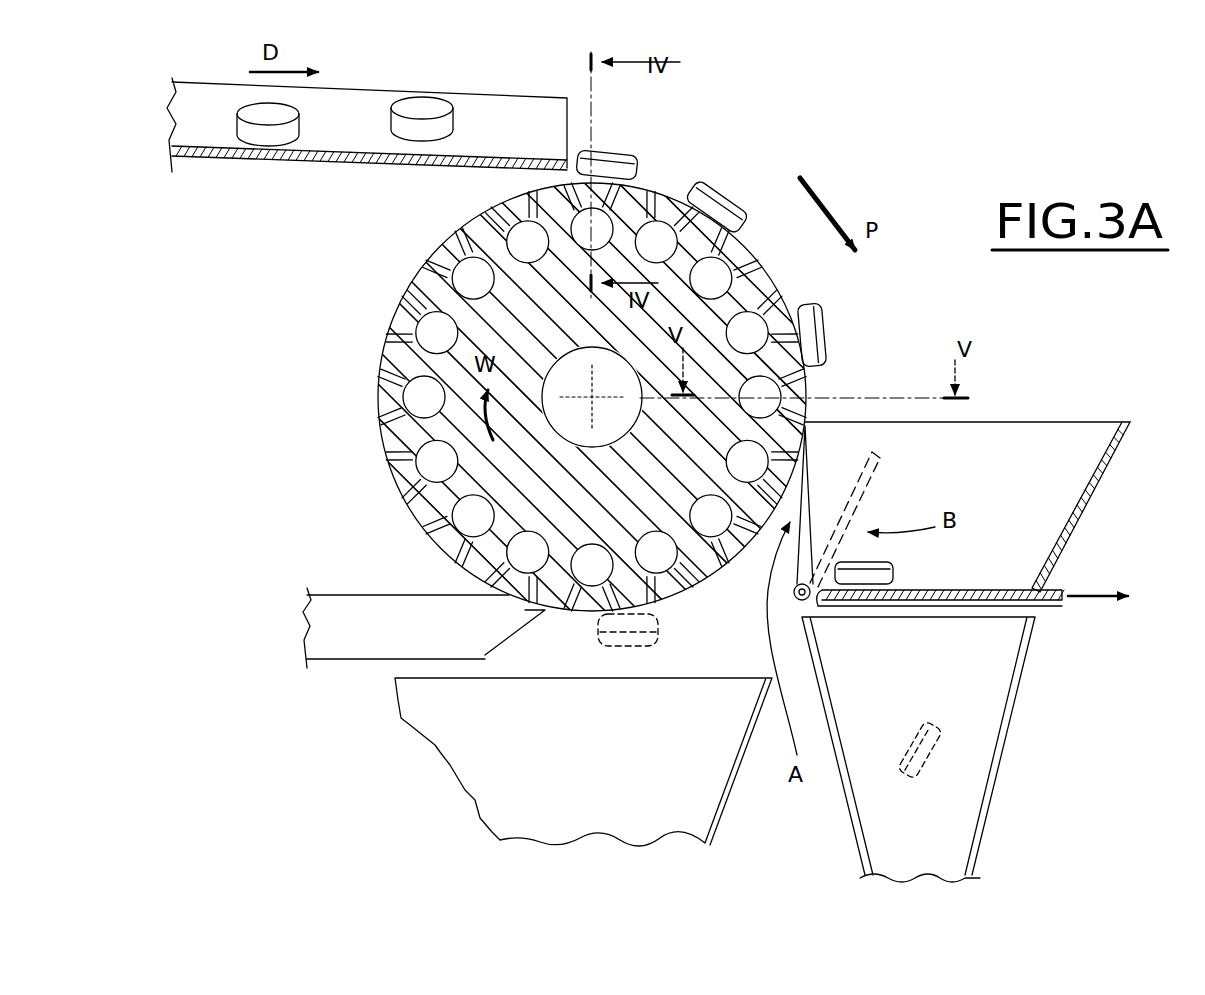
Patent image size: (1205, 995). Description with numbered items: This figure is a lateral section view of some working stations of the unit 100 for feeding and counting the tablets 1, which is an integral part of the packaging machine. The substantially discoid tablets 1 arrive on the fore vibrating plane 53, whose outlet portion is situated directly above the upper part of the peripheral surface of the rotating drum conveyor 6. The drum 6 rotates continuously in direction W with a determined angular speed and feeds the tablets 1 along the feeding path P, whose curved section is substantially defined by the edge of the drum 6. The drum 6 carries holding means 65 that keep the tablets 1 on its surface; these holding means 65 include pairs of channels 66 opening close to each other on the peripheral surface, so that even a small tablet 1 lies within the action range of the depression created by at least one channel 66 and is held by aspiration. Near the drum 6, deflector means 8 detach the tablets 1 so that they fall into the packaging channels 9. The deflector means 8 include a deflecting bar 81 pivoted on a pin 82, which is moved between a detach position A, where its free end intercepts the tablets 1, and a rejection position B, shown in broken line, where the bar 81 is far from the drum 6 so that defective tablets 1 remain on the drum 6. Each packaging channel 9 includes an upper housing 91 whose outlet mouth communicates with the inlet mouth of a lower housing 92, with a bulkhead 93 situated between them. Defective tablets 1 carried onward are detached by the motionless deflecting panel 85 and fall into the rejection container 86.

The tablets 1 is at (420, 100).
The fore vibrating plane 53 is at (292, 174).
The rotating drum conveyor 6 is at (780, 166).
The holding means 65 is at (472, 516).
The channels 66 is at (400, 410).
The unit for feeding and counting tablets 100 is at (958, 158).
The packaging channels 9 is at (1001, 448).
The upper housing 91 is at (1100, 508).
The deflector means 8 is at (868, 506).
The deflecting bar 81 is at (876, 460).
The pin 82 is at (800, 603).
The bulkhead 93 is at (1068, 610).
The lower housing 92 is at (1037, 693).
The deflecting panel 85 is at (345, 620).
The rejection container 86 is at (452, 726).